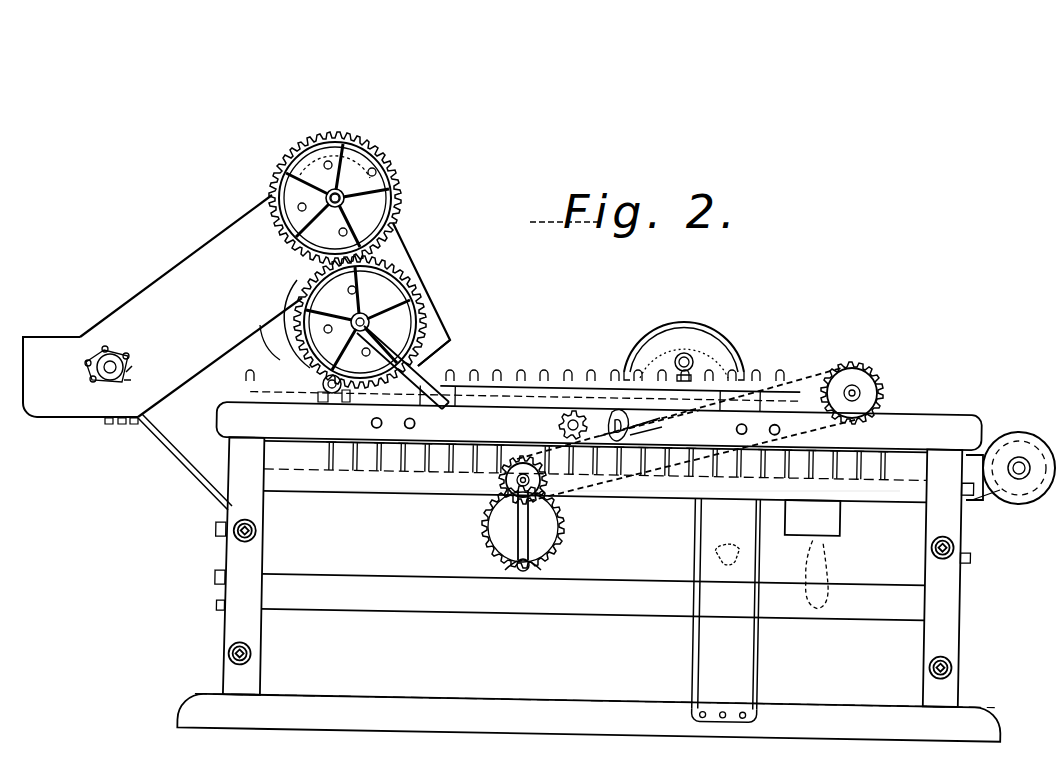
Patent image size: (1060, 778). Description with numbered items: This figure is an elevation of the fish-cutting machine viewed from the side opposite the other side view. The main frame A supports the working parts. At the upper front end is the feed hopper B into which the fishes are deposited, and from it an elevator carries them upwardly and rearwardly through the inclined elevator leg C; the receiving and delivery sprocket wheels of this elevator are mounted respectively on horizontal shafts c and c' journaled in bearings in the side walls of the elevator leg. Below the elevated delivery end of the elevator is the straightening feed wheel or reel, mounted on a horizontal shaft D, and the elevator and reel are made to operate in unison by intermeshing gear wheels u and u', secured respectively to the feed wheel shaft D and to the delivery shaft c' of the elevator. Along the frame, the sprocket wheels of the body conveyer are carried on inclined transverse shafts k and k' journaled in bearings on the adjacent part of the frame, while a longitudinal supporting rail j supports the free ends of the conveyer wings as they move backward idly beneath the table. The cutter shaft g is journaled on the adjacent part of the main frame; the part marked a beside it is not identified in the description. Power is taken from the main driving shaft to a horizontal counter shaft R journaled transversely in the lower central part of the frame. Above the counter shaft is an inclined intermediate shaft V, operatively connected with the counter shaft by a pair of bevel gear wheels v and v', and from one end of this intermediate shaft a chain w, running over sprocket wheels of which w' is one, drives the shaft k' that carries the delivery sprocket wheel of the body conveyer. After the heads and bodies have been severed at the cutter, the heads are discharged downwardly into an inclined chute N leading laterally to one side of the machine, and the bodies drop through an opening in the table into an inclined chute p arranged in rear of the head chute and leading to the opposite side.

The main frame A is at (252, 678).
The feed hopper B is at (10, 362).
The elevator leg C is at (265, 306).
The horizontal shaft c is at (108, 379).
The delivery shaft c' is at (286, 185).
The gear wheel u' is at (335, 192).
The gear wheel u is at (291, 322).
The feed wheel shaft D is at (371, 332).
The inclined transverse shaft k is at (329, 402).
The inclined transverse shaft k' is at (860, 378).
The chain w is at (650, 466).
The sprocket wheel w' is at (501, 494).
The bevel gear wheel v is at (532, 528).
The bevel gear wheel v' is at (610, 471).
The intermediate shaft V is at (505, 482).
The counter shaft R is at (523, 572).
The disk a is at (698, 330).
The cutter shaft g is at (680, 355).
The longitudinal supporting rail j is at (372, 488).
The inclined chute N is at (725, 610).
The inclined chute p is at (811, 554).